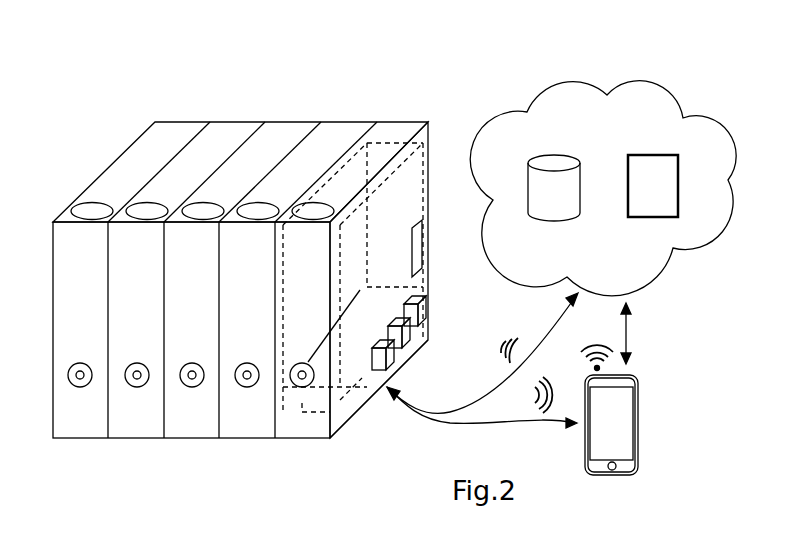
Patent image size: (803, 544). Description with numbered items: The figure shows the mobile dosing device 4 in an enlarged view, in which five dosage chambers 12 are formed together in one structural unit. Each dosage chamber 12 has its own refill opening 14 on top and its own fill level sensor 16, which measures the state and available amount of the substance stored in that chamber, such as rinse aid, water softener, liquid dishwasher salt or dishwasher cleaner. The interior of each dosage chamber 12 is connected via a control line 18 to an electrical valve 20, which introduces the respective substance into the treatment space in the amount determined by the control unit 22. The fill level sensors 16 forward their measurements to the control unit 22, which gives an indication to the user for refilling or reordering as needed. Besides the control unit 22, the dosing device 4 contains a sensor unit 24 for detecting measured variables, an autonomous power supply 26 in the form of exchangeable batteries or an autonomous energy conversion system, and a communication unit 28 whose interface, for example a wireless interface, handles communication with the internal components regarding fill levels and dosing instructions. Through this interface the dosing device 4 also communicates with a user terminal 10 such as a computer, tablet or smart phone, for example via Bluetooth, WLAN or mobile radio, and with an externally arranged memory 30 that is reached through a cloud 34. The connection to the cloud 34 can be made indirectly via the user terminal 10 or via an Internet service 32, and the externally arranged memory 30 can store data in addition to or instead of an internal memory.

The dosing device 4 is at (66, 120).
The user terminal 10 is at (642, 412).
The dosage chamber 12 is at (428, 67).
The refill opening 14 is at (311, 150).
The fill level sensor 16 is at (423, 247).
The control line 18 is at (379, 400).
The electrical valve 20 is at (300, 387).
The control unit 22 is at (428, 312).
The sensor unit 24 is at (412, 352).
The autonomous power supply 26 is at (408, 370).
The communication unit 28 is at (369, 380).
The externally arranged memory 30 is at (565, 199).
The Internet service 32 is at (664, 193).
The cloud 34 is at (651, 79).